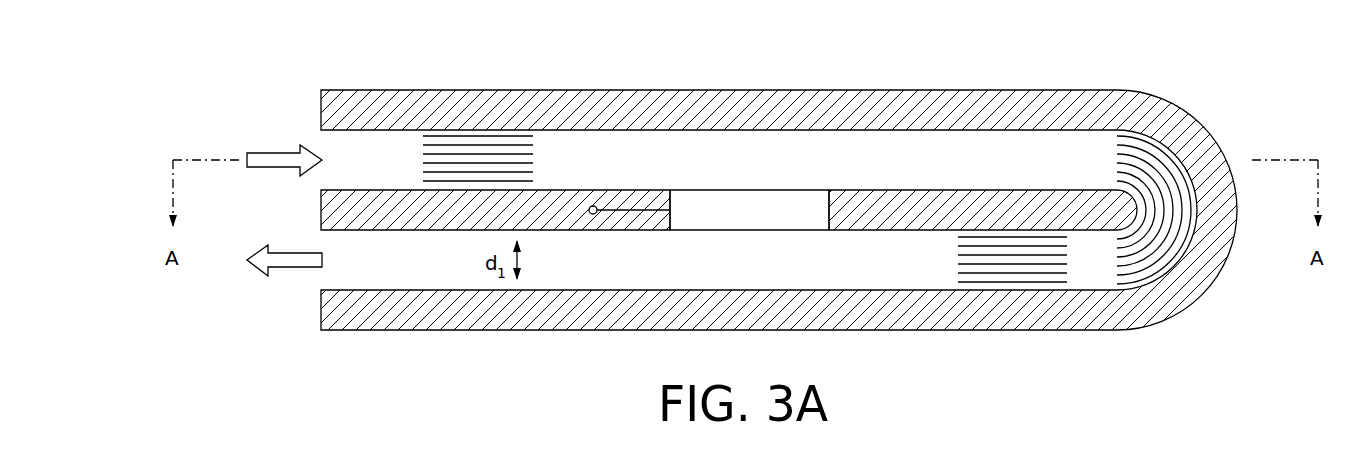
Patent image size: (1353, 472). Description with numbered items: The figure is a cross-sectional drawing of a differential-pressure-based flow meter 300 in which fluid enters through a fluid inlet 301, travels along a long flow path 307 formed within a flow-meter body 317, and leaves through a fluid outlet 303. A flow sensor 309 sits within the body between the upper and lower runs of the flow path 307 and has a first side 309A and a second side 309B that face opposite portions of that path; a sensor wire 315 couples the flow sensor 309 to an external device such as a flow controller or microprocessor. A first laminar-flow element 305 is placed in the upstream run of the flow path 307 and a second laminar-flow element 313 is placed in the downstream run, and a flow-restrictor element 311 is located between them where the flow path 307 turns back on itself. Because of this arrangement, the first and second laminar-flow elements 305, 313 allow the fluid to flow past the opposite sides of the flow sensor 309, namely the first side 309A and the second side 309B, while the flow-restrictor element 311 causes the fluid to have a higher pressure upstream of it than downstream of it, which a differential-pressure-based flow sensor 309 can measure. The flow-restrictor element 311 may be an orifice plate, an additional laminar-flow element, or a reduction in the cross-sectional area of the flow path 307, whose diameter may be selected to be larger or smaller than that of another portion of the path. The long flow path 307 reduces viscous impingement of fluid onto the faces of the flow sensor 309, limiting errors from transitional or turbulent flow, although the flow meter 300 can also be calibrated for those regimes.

The differential-pressure-based flow meter 300 is at (215, 47).
The fluid inlet 301 is at (257, 153).
The fluid outlet 303 is at (277, 270).
The first laminar-flow element 305 is at (481, 136).
The flow path 307 is at (358, 152).
The flow sensor 309 is at (729, 219).
The first side 309A is at (752, 190).
The second side 309B is at (740, 231).
The flow-restrictor element 311 is at (1165, 150).
The second laminar-flow element 313 is at (1028, 283).
The sensor wire 315 is at (646, 208).
The flow-meter body 317 is at (855, 100).